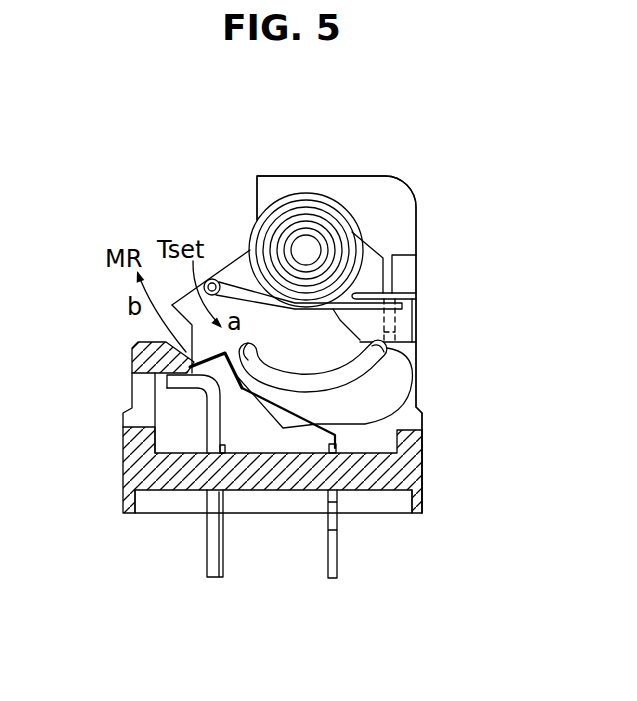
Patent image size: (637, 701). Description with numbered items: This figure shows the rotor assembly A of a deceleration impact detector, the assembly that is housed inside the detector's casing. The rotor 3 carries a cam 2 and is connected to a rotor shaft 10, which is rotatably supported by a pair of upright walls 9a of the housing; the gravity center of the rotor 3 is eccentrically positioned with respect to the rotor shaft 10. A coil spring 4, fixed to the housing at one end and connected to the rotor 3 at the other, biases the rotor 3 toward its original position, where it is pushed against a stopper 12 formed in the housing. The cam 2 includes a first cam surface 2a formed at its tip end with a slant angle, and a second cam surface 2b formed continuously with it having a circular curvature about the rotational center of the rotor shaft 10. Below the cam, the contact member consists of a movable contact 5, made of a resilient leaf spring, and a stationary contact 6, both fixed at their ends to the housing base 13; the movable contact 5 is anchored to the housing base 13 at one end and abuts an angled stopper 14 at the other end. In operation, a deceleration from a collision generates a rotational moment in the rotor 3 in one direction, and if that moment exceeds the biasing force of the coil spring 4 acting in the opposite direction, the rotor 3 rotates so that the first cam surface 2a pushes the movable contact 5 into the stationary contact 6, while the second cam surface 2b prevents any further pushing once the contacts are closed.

The rotor assembly A is at (230, 157).
The cam 2 is at (373, 362).
The first cam surface 2a is at (254, 372).
The second cam surface 2b is at (357, 388).
The rotor 3 is at (385, 395).
The coil spring 4 is at (345, 222).
The movable contact 5 is at (289, 412).
The stationary contact 6 is at (172, 386).
The upright walls 9a is at (392, 222).
The rotor shaft 10 is at (307, 250).
The stopper 12 is at (407, 268).
The housing base 13 is at (410, 472).
The angled stopper 14 is at (140, 364).